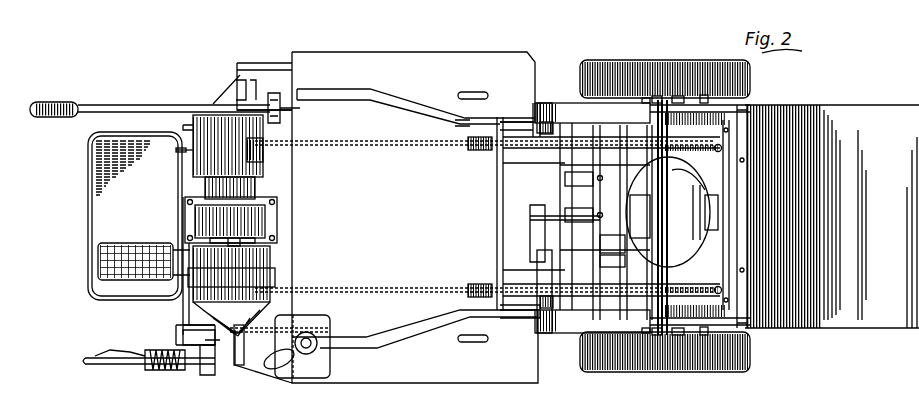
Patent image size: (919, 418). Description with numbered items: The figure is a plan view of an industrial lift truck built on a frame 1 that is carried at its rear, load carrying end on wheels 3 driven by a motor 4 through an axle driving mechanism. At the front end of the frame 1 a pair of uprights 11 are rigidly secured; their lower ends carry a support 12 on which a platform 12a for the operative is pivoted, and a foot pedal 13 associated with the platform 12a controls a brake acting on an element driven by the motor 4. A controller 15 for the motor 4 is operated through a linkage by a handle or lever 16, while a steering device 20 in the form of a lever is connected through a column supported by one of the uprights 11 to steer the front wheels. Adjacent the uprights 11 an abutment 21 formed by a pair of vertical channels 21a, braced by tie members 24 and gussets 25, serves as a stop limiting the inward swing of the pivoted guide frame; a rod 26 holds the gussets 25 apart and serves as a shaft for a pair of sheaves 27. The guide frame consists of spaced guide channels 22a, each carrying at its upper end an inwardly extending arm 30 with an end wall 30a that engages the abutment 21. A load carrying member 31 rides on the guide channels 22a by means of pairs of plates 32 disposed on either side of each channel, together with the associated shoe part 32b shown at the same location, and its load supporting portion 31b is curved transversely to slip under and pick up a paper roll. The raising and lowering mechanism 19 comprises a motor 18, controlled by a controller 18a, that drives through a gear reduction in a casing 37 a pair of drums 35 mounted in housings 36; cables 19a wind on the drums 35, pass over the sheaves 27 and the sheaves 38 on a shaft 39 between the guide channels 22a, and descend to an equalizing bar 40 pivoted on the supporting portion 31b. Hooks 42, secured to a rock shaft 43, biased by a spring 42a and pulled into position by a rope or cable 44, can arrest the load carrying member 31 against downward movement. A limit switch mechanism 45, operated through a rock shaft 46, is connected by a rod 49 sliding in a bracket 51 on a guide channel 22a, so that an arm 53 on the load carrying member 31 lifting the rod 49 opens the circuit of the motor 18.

The frame 1 is at (264, 60).
The wheels 3 is at (612, 62).
The motor 4 is at (530, 192).
The uprights 11 is at (263, 330).
The support 12 is at (189, 131).
The platform 12a is at (88, 214).
The foot pedal 13 is at (98, 262).
The controller 15 is at (182, 310).
The handle or lever 16 is at (85, 361).
The motor 18 is at (256, 268).
The controller 18a is at (322, 357).
The raising and lowering mechanism 19 is at (233, 166).
The cables 19a is at (385, 143).
The steering device 20 is at (128, 106).
The abutment 21 is at (528, 112).
The channels 21a is at (546, 121).
The guide channels 22a is at (742, 112).
The tie members 24 is at (412, 102).
The gusset 25 is at (458, 123).
The rod 26 is at (497, 238).
The sheaves 27 is at (478, 151).
The arm 30 is at (578, 100).
The end wall 30a is at (532, 100).
The load carrying member 31 is at (808, 104).
The load supporting portion 31b is at (893, 106).
The plates 32 is at (705, 110).
The disc 32b is at (684, 182).
The drums 35 is at (262, 152).
The housings 36 is at (200, 150).
The casing 37 is at (276, 226).
The sheaves 38 is at (592, 219).
The shaft 39 is at (639, 216).
The equalizing bar 40 is at (716, 202).
The hooks 42 is at (667, 93).
The spring 42a is at (648, 96).
The rock shaft 43 is at (595, 200).
The rope or cable 44 is at (663, 97).
The limit switch mechanism 45 is at (565, 218).
The rock shaft 46 is at (598, 240).
The rod 49 is at (555, 252).
The bracket 51 is at (540, 275).
The arm 53 is at (620, 266).